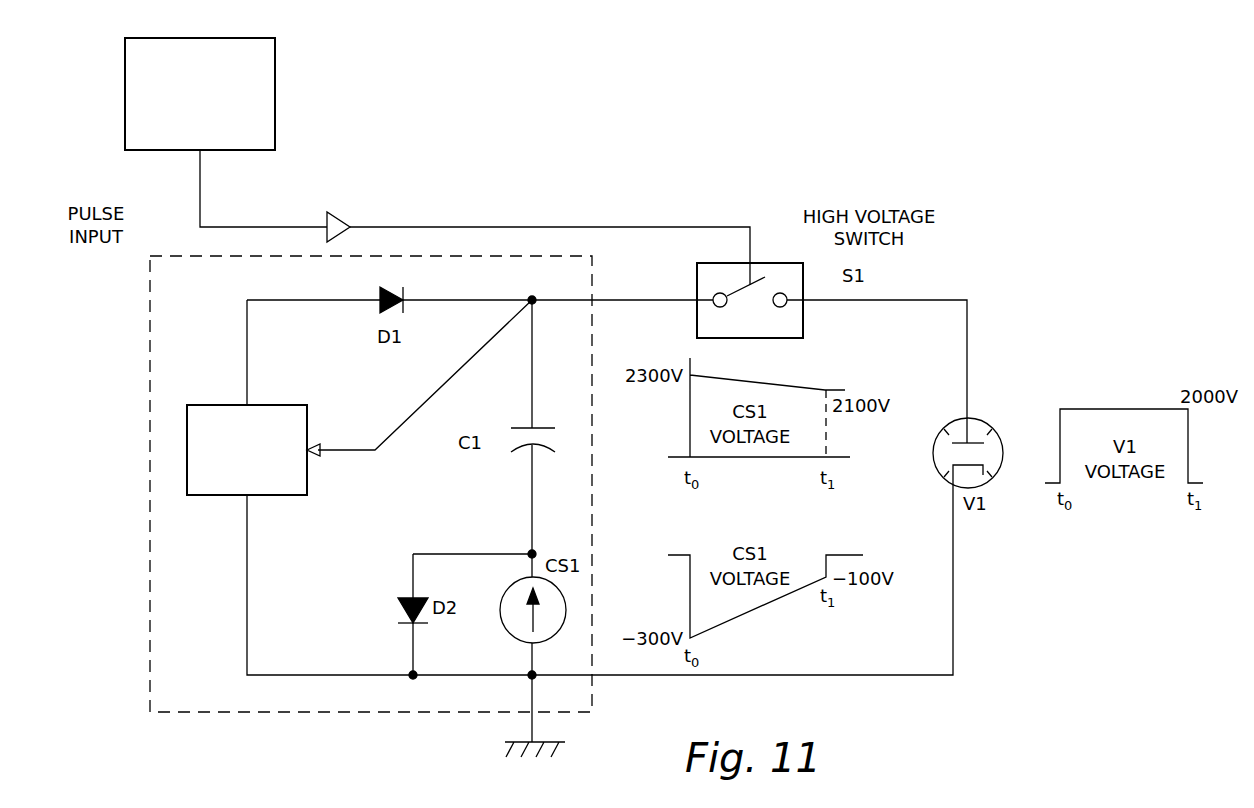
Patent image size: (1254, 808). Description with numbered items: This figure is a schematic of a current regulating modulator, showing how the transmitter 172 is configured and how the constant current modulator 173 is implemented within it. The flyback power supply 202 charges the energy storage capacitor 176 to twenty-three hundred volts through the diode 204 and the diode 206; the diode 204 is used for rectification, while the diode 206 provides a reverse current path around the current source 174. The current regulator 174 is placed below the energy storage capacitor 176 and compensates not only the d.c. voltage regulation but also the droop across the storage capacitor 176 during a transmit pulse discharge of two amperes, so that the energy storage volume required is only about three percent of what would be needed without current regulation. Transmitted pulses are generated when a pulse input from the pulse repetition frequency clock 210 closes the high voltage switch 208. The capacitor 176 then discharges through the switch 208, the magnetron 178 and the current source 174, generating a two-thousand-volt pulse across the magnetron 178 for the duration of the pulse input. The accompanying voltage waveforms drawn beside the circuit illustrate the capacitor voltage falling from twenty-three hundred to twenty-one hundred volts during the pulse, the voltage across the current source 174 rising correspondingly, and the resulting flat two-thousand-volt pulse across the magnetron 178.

The pulse repetition frequency clock 210 is at (275, 75).
The transmitter 172 is at (517, 178).
The constant current modulator 173 is at (150, 450).
The high voltage switch 208 is at (715, 263).
The flyback power supply 202 is at (297, 405).
The diode 204 is at (392, 290).
The energy storage capacitor 176 is at (531, 446).
The current regulator 174 is at (565, 596).
The diode 206 is at (421, 597).
The magnetron 178 is at (988, 430).